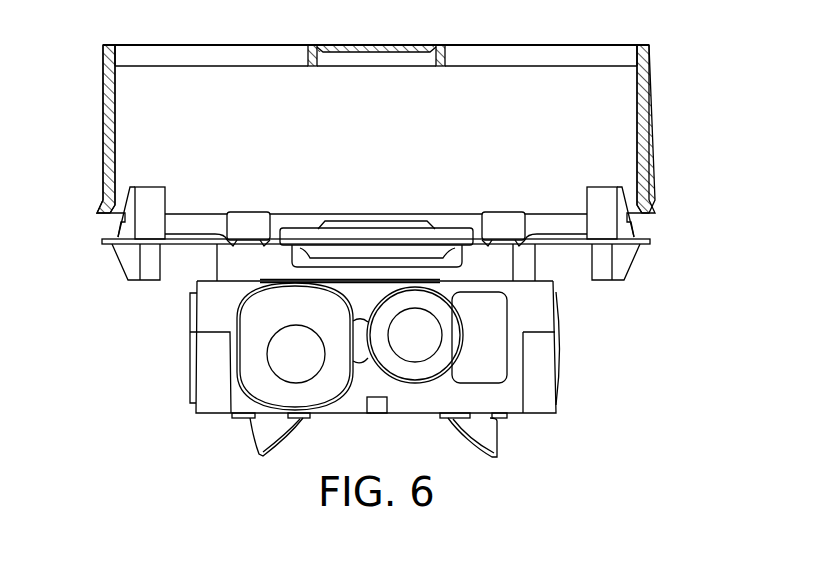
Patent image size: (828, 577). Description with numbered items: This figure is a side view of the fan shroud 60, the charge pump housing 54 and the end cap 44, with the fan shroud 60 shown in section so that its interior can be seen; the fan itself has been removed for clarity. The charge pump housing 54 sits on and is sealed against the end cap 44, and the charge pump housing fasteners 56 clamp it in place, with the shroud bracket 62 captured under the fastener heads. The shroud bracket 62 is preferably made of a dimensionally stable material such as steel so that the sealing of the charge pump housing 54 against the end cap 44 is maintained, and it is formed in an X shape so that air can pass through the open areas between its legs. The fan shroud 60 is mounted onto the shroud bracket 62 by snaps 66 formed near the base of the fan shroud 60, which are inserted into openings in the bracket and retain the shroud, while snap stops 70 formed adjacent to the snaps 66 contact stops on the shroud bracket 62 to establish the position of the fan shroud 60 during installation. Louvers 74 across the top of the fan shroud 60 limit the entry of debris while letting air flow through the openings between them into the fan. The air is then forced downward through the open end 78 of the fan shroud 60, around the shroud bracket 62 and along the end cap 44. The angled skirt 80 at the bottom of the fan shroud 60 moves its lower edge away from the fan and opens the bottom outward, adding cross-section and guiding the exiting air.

The end cap 44 is at (517, 318).
The charge pump housing 54 is at (240, 262).
The charge pump housing fasteners 56 is at (250, 212).
The fan shroud 60 is at (649, 107).
The shroud bracket 62 is at (102, 241).
The snaps 66 is at (115, 271).
The snap stops 70 is at (591, 235).
The louvers 74 is at (545, 67).
The open end 78 is at (183, 200).
The angled skirt 80 is at (655, 204).